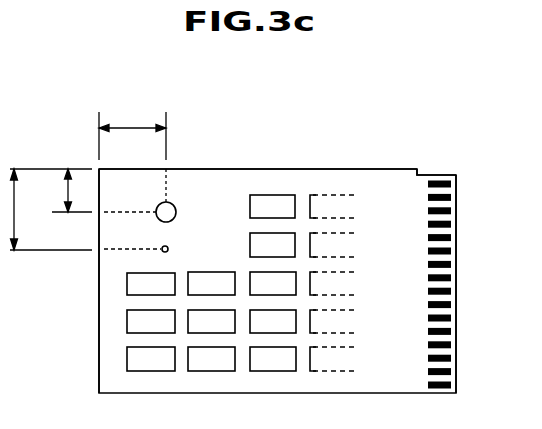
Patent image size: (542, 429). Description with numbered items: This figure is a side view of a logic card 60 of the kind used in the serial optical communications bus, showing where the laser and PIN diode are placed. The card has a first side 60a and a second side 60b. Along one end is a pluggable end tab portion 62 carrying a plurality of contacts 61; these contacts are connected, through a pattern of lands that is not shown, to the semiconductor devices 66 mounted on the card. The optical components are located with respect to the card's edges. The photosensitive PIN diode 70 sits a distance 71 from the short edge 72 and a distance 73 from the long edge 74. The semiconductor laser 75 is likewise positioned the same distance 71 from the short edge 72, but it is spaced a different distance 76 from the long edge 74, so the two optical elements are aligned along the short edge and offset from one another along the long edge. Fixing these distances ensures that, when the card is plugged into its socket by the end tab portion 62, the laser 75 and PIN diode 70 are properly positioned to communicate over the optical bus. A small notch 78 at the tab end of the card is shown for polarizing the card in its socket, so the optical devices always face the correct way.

The logic card 60 is at (405, 280).
The first side 60a is at (288, 190).
The second side 60b is at (229, 190).
The contacts 61 is at (428, 317).
The pluggable end tab portion 62 is at (457, 247).
The semiconductor devices 66 is at (127, 287).
The photosensitive PIN diode 70 is at (177, 212).
The distance 71 is at (136, 127).
The short edge 72 is at (99, 357).
The distance 73 is at (58, 194).
The long edge 74 is at (351, 169).
The semiconductor laser 75 is at (169, 248).
The distance 76 is at (17, 220).
The keying notch 78 is at (437, 173).